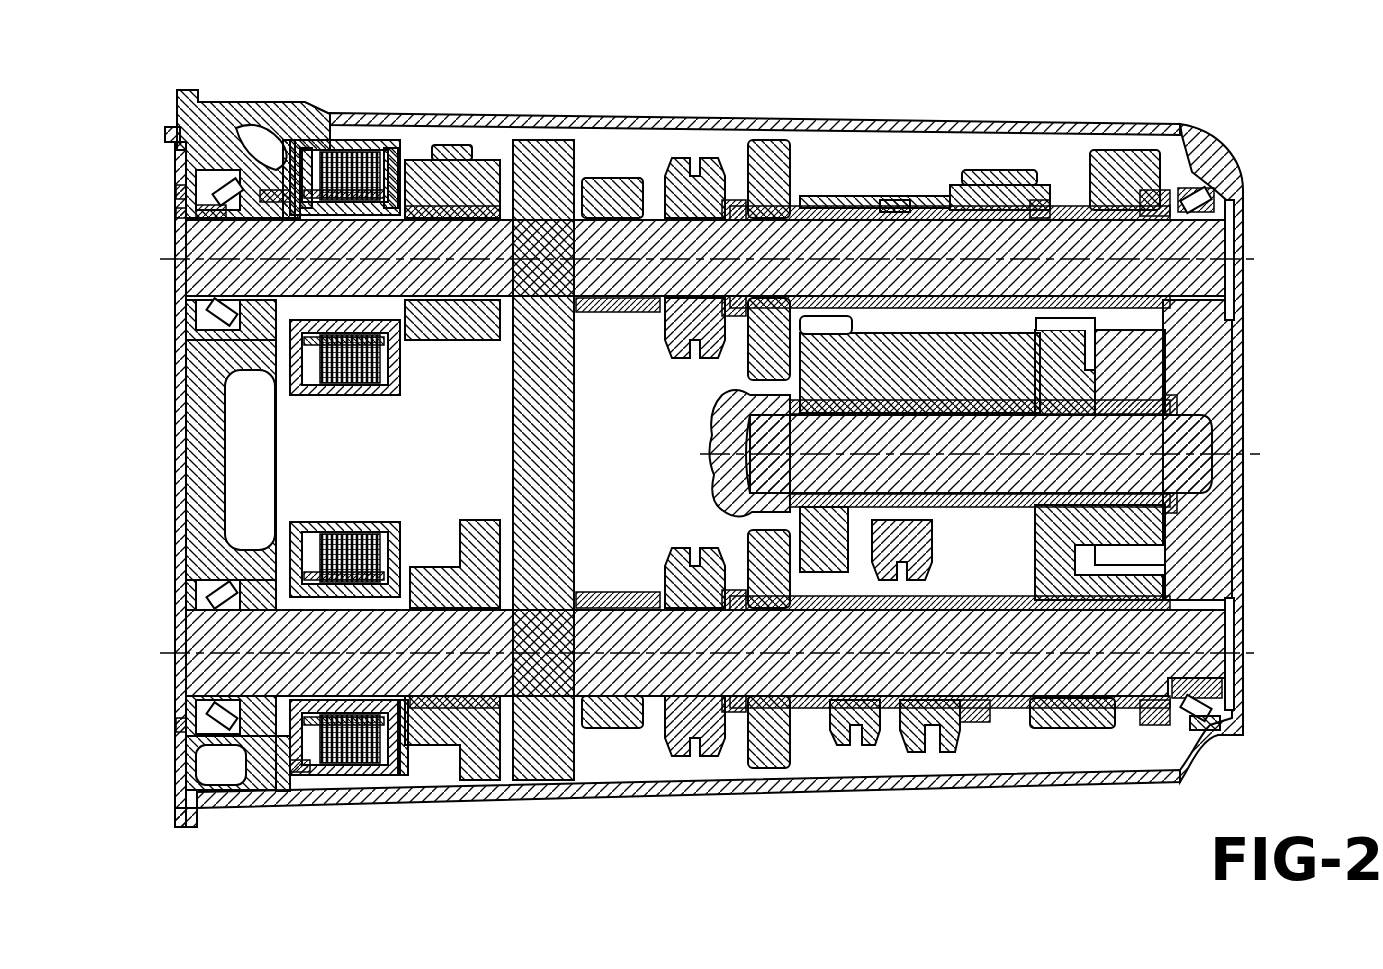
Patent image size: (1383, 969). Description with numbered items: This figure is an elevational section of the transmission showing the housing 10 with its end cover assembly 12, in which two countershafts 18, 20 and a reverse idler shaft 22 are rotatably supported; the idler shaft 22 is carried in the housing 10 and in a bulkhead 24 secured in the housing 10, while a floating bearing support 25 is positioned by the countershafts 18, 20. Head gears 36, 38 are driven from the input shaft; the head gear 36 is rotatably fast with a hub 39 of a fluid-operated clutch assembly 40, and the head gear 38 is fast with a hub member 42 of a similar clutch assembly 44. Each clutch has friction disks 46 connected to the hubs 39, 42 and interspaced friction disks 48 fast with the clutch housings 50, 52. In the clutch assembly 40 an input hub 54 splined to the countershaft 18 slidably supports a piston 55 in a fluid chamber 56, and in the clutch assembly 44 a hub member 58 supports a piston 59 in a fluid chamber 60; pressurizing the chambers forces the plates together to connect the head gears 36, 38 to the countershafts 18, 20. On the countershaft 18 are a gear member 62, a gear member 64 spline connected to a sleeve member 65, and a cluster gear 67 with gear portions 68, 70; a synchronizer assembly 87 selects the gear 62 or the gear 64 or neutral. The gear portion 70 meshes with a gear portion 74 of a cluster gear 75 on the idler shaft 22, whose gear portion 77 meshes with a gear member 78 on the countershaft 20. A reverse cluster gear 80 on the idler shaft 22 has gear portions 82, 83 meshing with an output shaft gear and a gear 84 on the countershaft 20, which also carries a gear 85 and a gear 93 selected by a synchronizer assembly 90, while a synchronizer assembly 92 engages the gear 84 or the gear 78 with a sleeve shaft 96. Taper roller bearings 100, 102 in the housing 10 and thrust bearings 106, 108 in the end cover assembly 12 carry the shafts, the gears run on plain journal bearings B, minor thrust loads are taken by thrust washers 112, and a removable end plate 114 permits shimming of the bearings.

The housing 10 is at (918, 122).
The end cover assembly 12 is at (170, 163).
The countershaft 18 is at (1205, 246).
The countershaft 20 is at (1205, 632).
The reverse idler shaft 22 is at (1170, 468).
The bulkhead 24 is at (724, 483).
The floating bearing support 25 is at (540, 140).
The head gear 36 is at (433, 152).
The head gear 38 is at (478, 777).
The hub 39 is at (407, 156).
The clutch assembly 40 is at (287, 146).
The hub member 42 is at (408, 760).
The clutch assembly 44 is at (272, 764).
The friction disks 46 is at (397, 150).
The friction disks 48 is at (338, 150).
The clutch housing 50 is at (310, 164).
The clutch housing 52 is at (284, 775).
The input hub 54 is at (182, 124).
The piston 55 is at (282, 197).
The fluid chamber 56 is at (262, 160).
The hub member 58 is at (226, 730).
The piston 59 is at (297, 780).
The fluid chamber 60 is at (272, 736).
The gear member 62 is at (608, 178).
The gear member 64 is at (776, 142).
The sleeve member 65 is at (888, 212).
The cluster gear 67 is at (1038, 206).
The gear portion 68 is at (995, 176).
The gear portion 70 is at (1125, 160).
The gear portion 74 is at (1148, 527).
The cluster gear 75 is at (1162, 553).
The gear portion 77 is at (1060, 333).
The gear member 78 is at (1080, 712).
The reverse cluster gear 80 is at (880, 410).
The gear portion 82 is at (983, 527).
The gear portion 83 is at (828, 336).
The gear 84 is at (808, 712).
The gear 85 is at (768, 762).
The synchronizer assembly 87 is at (694, 158).
The synchronizer assembly 90 is at (695, 748).
The synchronizer assembly 92 is at (905, 752).
The gear 93 is at (628, 722).
The sleeve shaft 96 is at (940, 712).
The taper roller bearing 100 is at (1200, 697).
The taper roller bearing 102 is at (1203, 190).
The thrust bearing 106 is at (176, 192).
The thrust bearing 108 is at (182, 727).
The thrust washers 112 is at (505, 196).
The end plate 114 is at (176, 215).
The plain journal bearings B is at (848, 213).